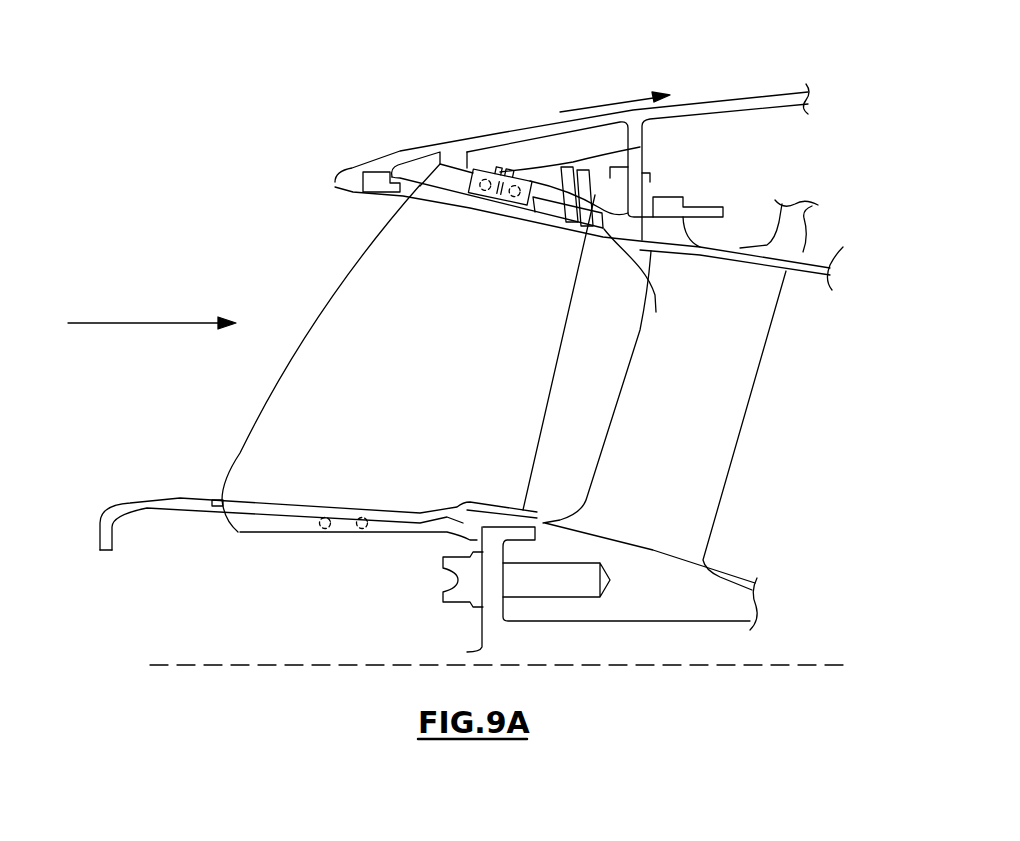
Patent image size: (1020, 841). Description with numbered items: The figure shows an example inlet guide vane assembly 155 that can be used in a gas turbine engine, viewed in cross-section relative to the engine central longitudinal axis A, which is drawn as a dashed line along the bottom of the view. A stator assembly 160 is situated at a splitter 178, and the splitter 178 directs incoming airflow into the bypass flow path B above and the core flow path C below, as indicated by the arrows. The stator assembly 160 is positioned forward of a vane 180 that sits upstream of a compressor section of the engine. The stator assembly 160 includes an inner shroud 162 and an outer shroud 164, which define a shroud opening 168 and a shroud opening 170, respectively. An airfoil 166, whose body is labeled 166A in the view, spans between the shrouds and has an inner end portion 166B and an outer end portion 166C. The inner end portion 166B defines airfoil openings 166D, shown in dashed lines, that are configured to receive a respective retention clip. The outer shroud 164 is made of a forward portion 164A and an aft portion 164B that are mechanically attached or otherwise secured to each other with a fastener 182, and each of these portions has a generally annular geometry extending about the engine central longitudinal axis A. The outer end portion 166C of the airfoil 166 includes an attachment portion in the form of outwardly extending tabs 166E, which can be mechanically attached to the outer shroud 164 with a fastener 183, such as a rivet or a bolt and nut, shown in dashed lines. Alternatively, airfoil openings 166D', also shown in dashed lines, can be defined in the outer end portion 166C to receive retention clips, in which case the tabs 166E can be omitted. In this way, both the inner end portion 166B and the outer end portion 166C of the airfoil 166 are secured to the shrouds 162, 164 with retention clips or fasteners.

The inlet guide vane assembly 155 is at (230, 161).
The splitter 178 is at (392, 153).
The outer end portion 166C is at (455, 165).
The forward portion 164A is at (460, 200).
The stator assembly 160 is at (484, 184).
The fastener 183 is at (512, 163).
The bypass flow path B is at (605, 104).
The tabs 166E is at (640, 147).
The fastener 182 is at (643, 198).
The outer shroud 164 is at (398, 194).
The shroud opening 170 is at (420, 188).
The airfoil openings 166D' is at (471, 247).
The airfoil 166 is at (338, 291).
The vane airfoil 166A is at (456, 364).
The aft portion 164B is at (656, 298).
The vane 180 is at (738, 450).
The inner shroud 162 is at (225, 510).
The shroud opening 168 is at (232, 517).
The inner end portion 166B is at (246, 520).
The airfoil openings 166D is at (314, 556).
The engine central longitudinal axis A is at (808, 664).
The core flow path C is at (128, 323).